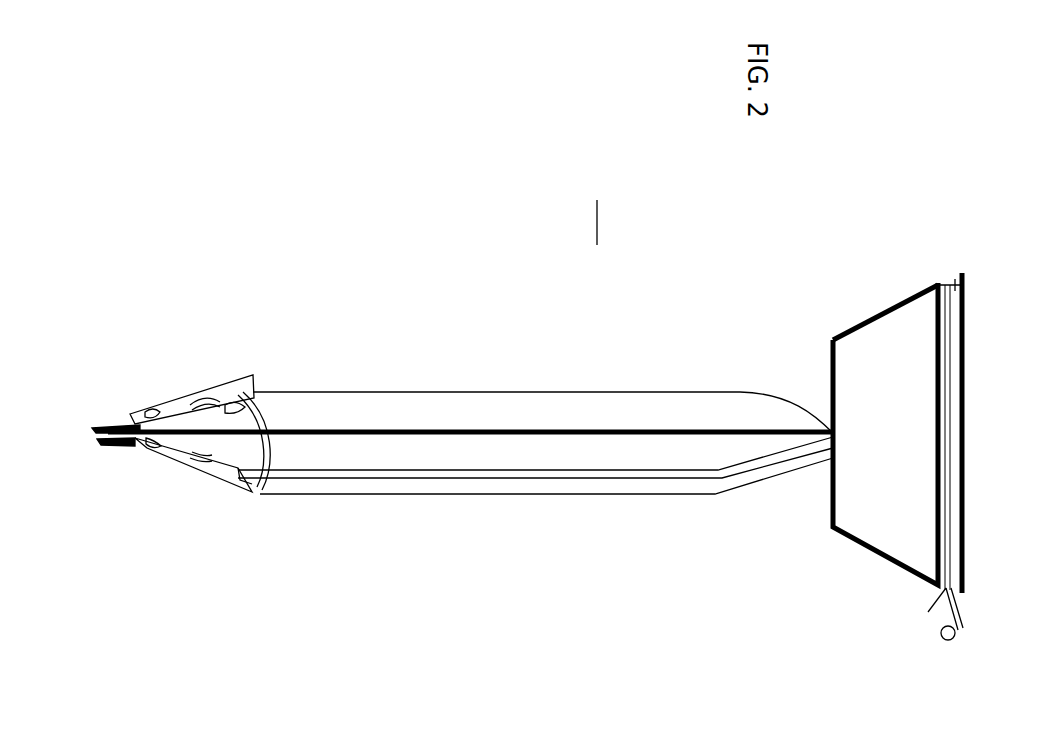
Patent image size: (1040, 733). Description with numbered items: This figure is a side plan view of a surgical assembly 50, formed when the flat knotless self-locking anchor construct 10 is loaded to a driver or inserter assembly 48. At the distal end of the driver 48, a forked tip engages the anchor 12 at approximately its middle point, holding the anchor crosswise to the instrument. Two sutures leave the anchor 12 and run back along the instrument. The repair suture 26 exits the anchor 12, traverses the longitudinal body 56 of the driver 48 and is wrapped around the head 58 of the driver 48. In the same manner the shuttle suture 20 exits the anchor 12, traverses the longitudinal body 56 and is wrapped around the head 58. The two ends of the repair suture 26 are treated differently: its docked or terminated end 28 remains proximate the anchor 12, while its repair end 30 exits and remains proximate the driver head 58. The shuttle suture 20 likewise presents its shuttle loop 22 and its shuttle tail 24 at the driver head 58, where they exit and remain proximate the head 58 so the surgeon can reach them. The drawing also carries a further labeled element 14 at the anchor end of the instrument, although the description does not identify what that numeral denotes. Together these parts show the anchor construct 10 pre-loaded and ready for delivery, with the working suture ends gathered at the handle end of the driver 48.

The flat knotless self-locking anchor construct 10 is at (190, 372).
The anchor 12 is at (106, 414).
The lower jaw 14 is at (92, 430).
The shuttle suture 20 is at (572, 497).
The shuttle loop 22 is at (941, 637).
The shuttle tail 24 is at (928, 612).
The repair suture 26 is at (472, 470).
The docked or terminated end 28 is at (262, 492).
The repair end 30 is at (965, 615).
The driver or inserter assembly 48 is at (795, 335).
The surgical assembly 50 is at (618, 222).
The longitudinal body 56 is at (693, 411).
The head 58 is at (887, 343).